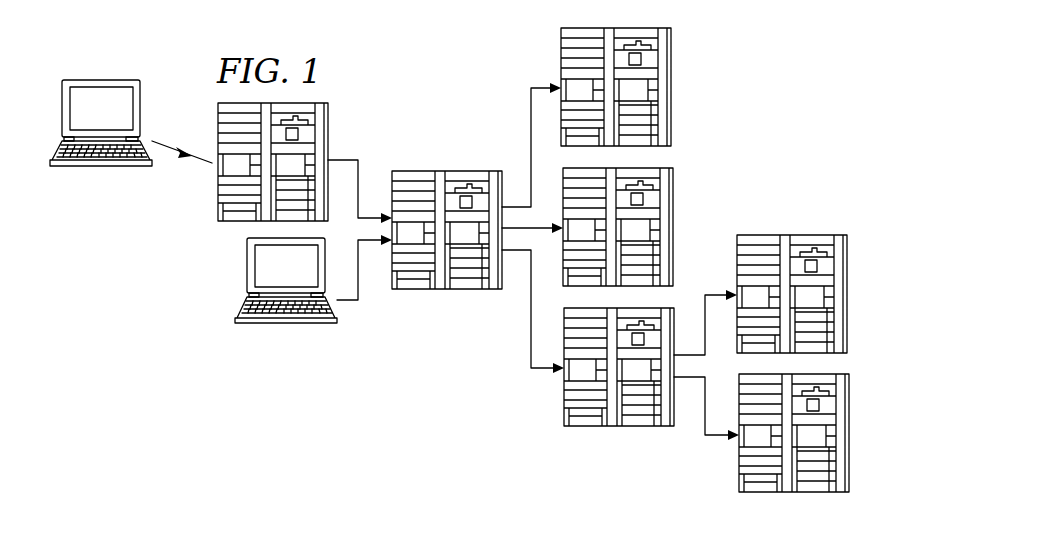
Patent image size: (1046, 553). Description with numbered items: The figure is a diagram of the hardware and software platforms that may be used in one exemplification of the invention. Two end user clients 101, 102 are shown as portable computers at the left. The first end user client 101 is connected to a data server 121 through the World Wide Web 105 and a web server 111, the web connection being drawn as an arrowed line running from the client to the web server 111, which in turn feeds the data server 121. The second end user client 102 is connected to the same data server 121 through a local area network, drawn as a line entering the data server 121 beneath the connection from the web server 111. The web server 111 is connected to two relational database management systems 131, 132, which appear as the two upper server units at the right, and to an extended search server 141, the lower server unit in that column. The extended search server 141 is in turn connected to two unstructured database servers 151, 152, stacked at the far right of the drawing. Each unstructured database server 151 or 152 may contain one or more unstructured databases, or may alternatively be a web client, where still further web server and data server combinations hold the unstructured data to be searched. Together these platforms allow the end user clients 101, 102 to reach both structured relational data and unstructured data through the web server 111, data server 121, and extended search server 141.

The end user client 101 is at (100, 80).
The end user client 102 is at (243, 305).
The World Wide Web 105 is at (174, 150).
The web server 111 is at (328, 132).
The data server 121 is at (425, 292).
The relational database management system 131 is at (672, 70).
The relational database management system 132 is at (673, 193).
The extended search server 141 is at (638, 428).
The unstructured database server 151 is at (850, 294).
The unstructured database server 152 is at (852, 435).